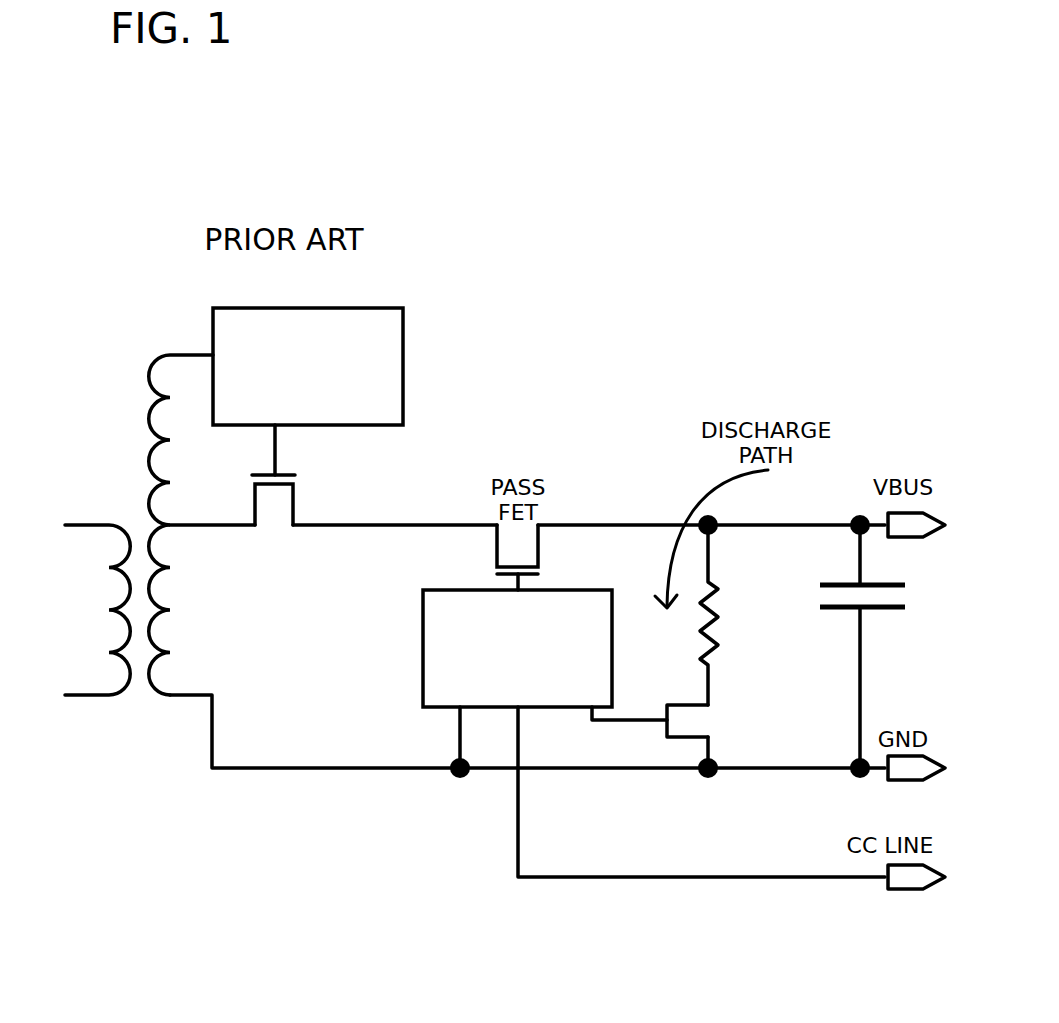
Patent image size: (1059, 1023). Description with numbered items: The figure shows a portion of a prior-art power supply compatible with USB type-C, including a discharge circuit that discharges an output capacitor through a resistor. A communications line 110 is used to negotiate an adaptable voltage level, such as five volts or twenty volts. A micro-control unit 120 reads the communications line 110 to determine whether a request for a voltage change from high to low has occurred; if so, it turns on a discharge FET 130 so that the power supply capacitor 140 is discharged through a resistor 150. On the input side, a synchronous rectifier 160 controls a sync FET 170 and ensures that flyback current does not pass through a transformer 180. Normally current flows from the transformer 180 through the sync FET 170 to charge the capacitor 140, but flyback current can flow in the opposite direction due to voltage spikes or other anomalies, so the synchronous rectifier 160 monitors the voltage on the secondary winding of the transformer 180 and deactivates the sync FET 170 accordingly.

The communications line 110 is at (587, 877).
The micro-control unit 120 is at (422, 680).
The discharge Field Effect Transistor 130 is at (734, 727).
The power supply capacitor 140 is at (812, 607).
The resistor 150 is at (713, 593).
The synchronous rectifier 160 is at (403, 328).
The sync FET 170 is at (297, 518).
The transformer 180 is at (160, 590).